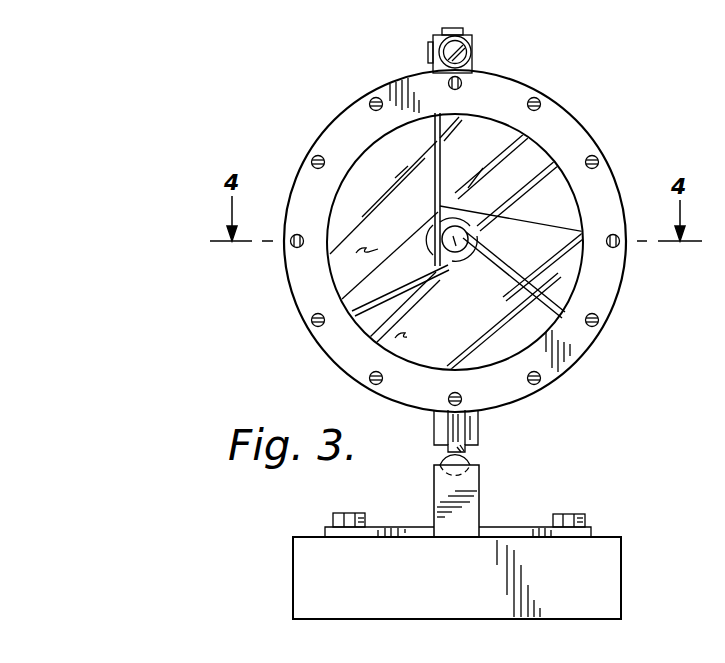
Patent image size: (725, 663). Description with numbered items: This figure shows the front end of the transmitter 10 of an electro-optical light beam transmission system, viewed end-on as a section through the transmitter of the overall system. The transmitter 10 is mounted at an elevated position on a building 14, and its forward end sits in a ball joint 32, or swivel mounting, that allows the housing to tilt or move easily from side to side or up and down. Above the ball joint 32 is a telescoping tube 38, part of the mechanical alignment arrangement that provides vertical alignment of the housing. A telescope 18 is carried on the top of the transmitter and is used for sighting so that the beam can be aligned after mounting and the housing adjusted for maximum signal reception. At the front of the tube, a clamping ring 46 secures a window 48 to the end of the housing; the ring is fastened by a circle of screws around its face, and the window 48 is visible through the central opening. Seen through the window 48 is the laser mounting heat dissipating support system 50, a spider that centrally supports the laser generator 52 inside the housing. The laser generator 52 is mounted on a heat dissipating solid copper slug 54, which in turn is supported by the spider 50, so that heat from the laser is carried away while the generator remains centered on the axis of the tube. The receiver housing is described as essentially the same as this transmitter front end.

The transmitter 10 is at (584, 119).
The building 14 is at (608, 548).
The telescope 18 is at (471, 46).
The ball joint 32 is at (472, 458).
The telescoping tube 38 is at (479, 426).
The clamping ring 46 is at (597, 186).
The window 48 is at (377, 154).
The laser mounting heat dissipating support system 50 is at (556, 300).
The laser generator 52 is at (432, 240).
The heat dissipating solid copper slug 54 is at (448, 268).